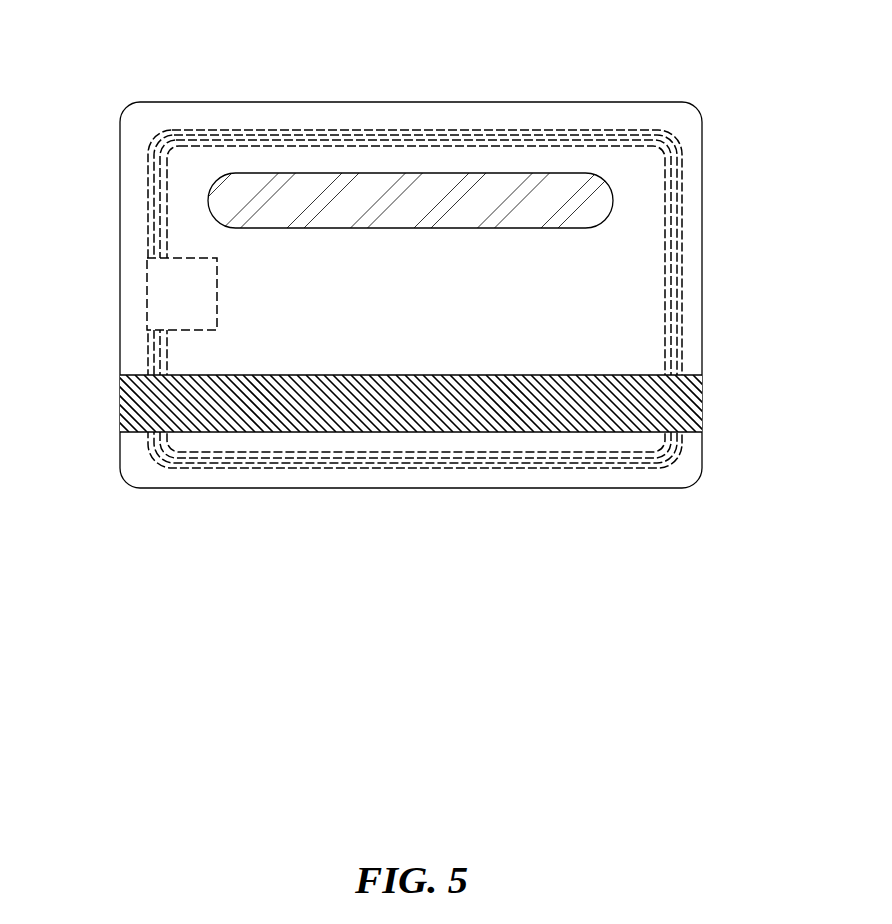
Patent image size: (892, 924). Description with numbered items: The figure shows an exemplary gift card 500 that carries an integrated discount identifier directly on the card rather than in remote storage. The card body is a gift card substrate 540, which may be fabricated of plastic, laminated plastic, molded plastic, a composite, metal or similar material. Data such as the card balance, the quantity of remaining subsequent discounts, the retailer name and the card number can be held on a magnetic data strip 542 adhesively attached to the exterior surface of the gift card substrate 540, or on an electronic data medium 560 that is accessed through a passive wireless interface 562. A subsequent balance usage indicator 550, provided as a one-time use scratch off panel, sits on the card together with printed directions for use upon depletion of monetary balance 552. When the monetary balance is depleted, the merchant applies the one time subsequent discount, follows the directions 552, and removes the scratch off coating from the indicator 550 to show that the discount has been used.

The gift card 500 is at (429, 254).
The gift card substrate 540 is at (702, 290).
The magnetic data strip 542 is at (410, 375).
The subsequent balance usage indicator 550 is at (615, 200).
The directions for use upon depletion of monetary balance 552 is at (543, 263).
The electronic data medium 560 is at (147, 295).
The passive wireless interface 562 is at (682, 253).